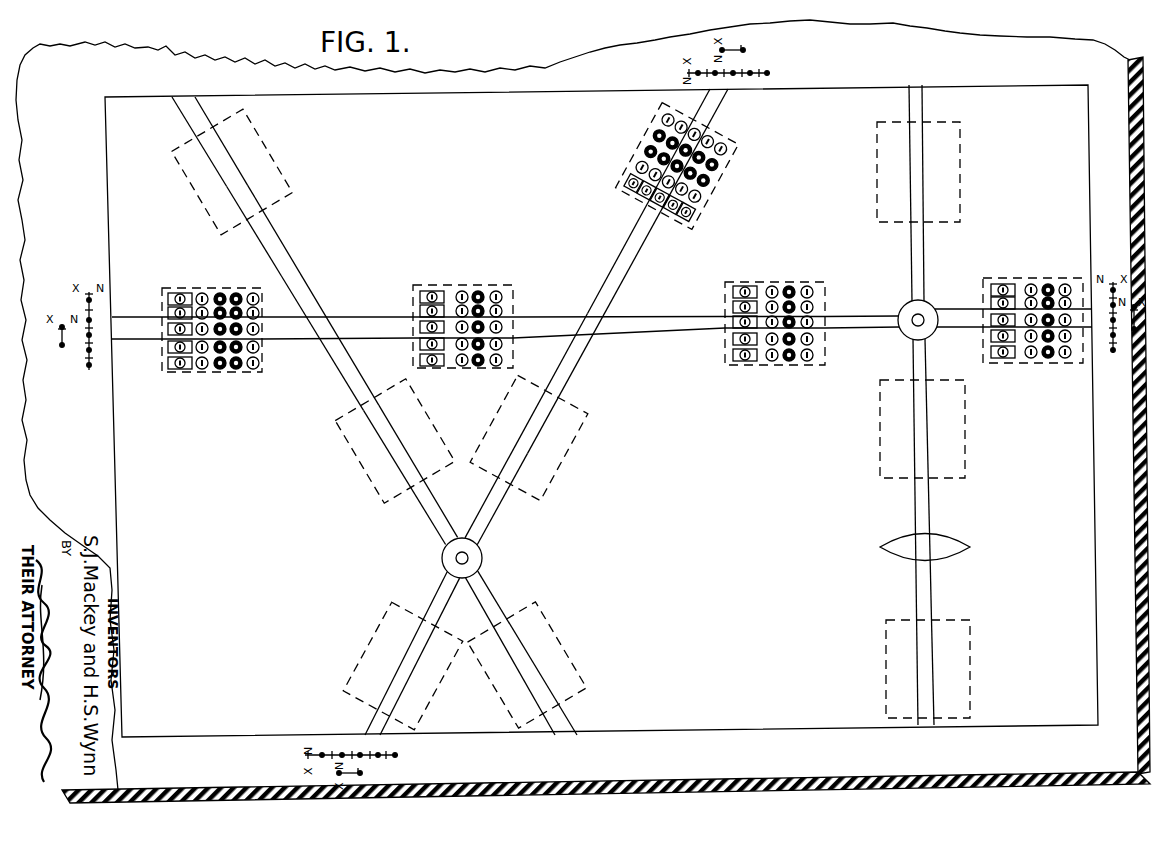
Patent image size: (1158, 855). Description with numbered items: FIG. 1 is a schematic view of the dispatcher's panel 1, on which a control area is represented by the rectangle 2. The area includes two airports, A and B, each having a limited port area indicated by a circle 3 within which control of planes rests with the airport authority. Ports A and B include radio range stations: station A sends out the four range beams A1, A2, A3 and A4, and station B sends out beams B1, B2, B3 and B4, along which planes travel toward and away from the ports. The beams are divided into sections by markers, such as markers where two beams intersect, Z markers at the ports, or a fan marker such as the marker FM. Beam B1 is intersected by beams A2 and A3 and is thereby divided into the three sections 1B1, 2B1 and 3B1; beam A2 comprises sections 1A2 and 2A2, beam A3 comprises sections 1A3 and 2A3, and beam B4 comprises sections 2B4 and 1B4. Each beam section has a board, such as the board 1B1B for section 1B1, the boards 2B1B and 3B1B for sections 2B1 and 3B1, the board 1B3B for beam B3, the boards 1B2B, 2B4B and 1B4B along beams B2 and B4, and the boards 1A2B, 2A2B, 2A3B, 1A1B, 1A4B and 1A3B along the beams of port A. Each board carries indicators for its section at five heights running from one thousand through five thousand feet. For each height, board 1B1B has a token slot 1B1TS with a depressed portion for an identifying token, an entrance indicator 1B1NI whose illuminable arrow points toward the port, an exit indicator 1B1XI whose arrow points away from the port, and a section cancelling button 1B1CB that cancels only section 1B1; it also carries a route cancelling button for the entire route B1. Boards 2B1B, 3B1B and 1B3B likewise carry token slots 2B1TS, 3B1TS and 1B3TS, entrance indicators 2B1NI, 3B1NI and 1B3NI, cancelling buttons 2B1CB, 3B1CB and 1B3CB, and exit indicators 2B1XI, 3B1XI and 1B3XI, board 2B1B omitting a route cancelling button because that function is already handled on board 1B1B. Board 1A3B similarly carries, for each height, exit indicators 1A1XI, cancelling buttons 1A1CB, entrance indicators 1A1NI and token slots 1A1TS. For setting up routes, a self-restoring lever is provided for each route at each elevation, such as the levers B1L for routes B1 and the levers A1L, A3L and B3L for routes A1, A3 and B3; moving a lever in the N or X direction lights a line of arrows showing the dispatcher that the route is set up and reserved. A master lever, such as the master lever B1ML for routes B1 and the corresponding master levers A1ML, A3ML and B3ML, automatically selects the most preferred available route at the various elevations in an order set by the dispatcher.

The panel 1 is at (1028, 40).
The rectangle 2 is at (1003, 86).
The circles 3 is at (442, 557).
The airport A is at (469, 556).
The airport B is at (913, 315).
The range beam A1 is at (408, 663).
The range beam A2 is at (304, 311).
The range beam A3 is at (608, 309).
The range beam A4 is at (522, 663).
The range beam B1 is at (118, 329).
The range beam B2 is at (914, 183).
The range beam B3 is at (1023, 319).
The range beam B4 is at (943, 544).
The beam section 1A2 is at (190, 125).
The beam section 2A2 is at (356, 388).
The segment 1A3 is at (715, 117).
The segment 2A3 is at (572, 382).
The beam section 1B1 is at (258, 330).
The beam section 2B1 is at (619, 328).
The beam section 3B1 is at (862, 321).
The segment 2B4 is at (930, 503).
The segment 1B4 is at (933, 596).
The block 1A2B is at (283, 200).
The block 2A2B is at (390, 501).
The block 2A3B is at (541, 500).
The block 1A1B is at (356, 708).
The block 1A4B is at (589, 692).
The block 1A3B is at (696, 212).
The board 1B1B is at (191, 319).
The board 2B1B is at (442, 315).
The block 3B1B is at (754, 311).
The block 1B3B is at (1012, 308).
The block 1B2B is at (957, 182).
The block 2B4B is at (963, 441).
The block 1B4B is at (968, 669).
The fan marker FM is at (897, 543).
The row 1A1XI is at (660, 119).
The rows 1A1CB is at (651, 136).
The row 1A1NI is at (634, 167).
The row 1A1TS is at (624, 184).
The token slot 1B1TS is at (180, 306).
The entrance indicator 1B1NI is at (202, 308).
The section cancelling button 1B1CB is at (228, 306).
The exit indicator 1B1XI is at (253, 308).
The column 2B1TS is at (432, 303).
The column 2B1NI is at (462, 304).
The column 2B1CB is at (478, 302).
The column 2B1XI is at (496, 305).
The column 3B1TS is at (745, 299).
The column 3B1NI is at (772, 300).
The column 3B1CB is at (789, 298).
The column 3B1XI is at (807, 301).
The column 1B3TS is at (1003, 295).
The column 1B3NI is at (1031, 297).
The column 1B3CB is at (1048, 295).
The column 1B3XI is at (1065, 297).
The meter A1L is at (362, 760).
The meter A1ML is at (362, 772).
The meter A3L is at (740, 70).
The meter A3ML is at (745, 54).
The levers B1L is at (90, 342).
The master lever B1ML is at (40, 338).
The meter B3L is at (1113, 329).
The meter B3ML is at (1130, 326).